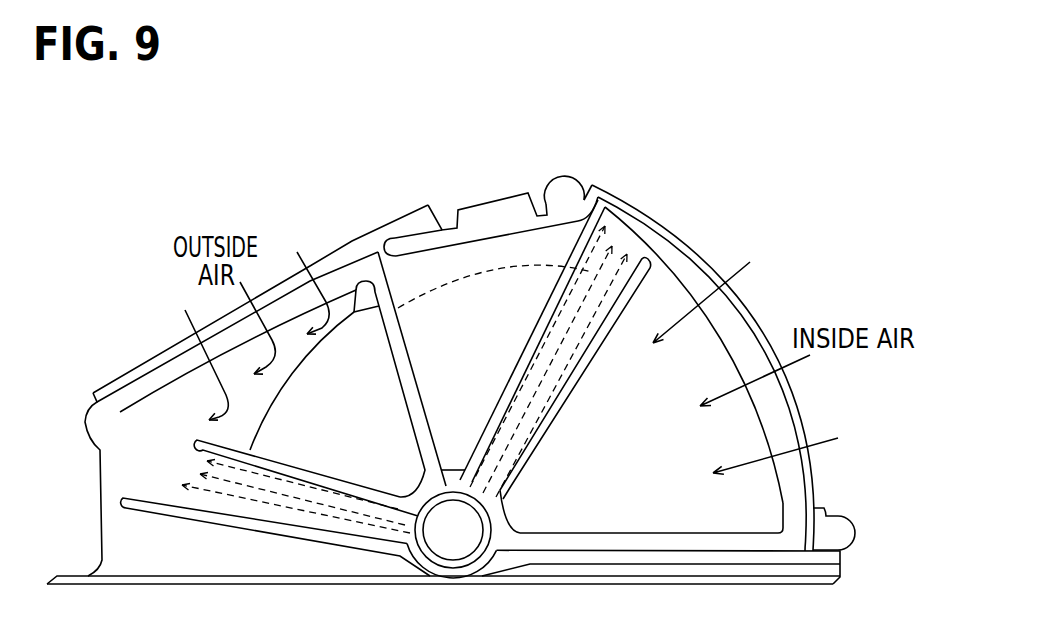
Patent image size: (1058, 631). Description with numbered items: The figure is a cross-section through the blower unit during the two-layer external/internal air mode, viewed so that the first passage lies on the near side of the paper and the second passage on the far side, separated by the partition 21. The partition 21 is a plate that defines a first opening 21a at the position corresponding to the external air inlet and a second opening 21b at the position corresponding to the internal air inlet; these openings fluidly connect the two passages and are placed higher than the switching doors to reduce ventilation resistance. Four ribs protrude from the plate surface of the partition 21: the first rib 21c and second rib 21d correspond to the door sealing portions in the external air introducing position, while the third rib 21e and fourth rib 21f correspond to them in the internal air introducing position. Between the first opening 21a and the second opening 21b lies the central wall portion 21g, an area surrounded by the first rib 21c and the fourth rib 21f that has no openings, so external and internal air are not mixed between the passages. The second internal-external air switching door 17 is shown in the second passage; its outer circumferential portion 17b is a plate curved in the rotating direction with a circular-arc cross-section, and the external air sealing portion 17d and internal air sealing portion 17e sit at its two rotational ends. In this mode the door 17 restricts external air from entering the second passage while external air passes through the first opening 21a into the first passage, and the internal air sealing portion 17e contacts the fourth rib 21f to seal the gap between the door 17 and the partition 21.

The partition 21 is at (402, 220).
The first opening 21a is at (222, 328).
The second opening 21b is at (725, 337).
The first rib 21c is at (468, 275).
The second rib 21d is at (740, 547).
The third rib 21e is at (115, 385).
The fourth rib 21f is at (617, 303).
The central wall portion 21g is at (513, 252).
The second internal-external air switching door 17 is at (355, 305).
The outer circumferential portion 17b is at (293, 350).
The external air sealing portion 17d is at (153, 498).
The internal air sealing portion 17e is at (620, 248).